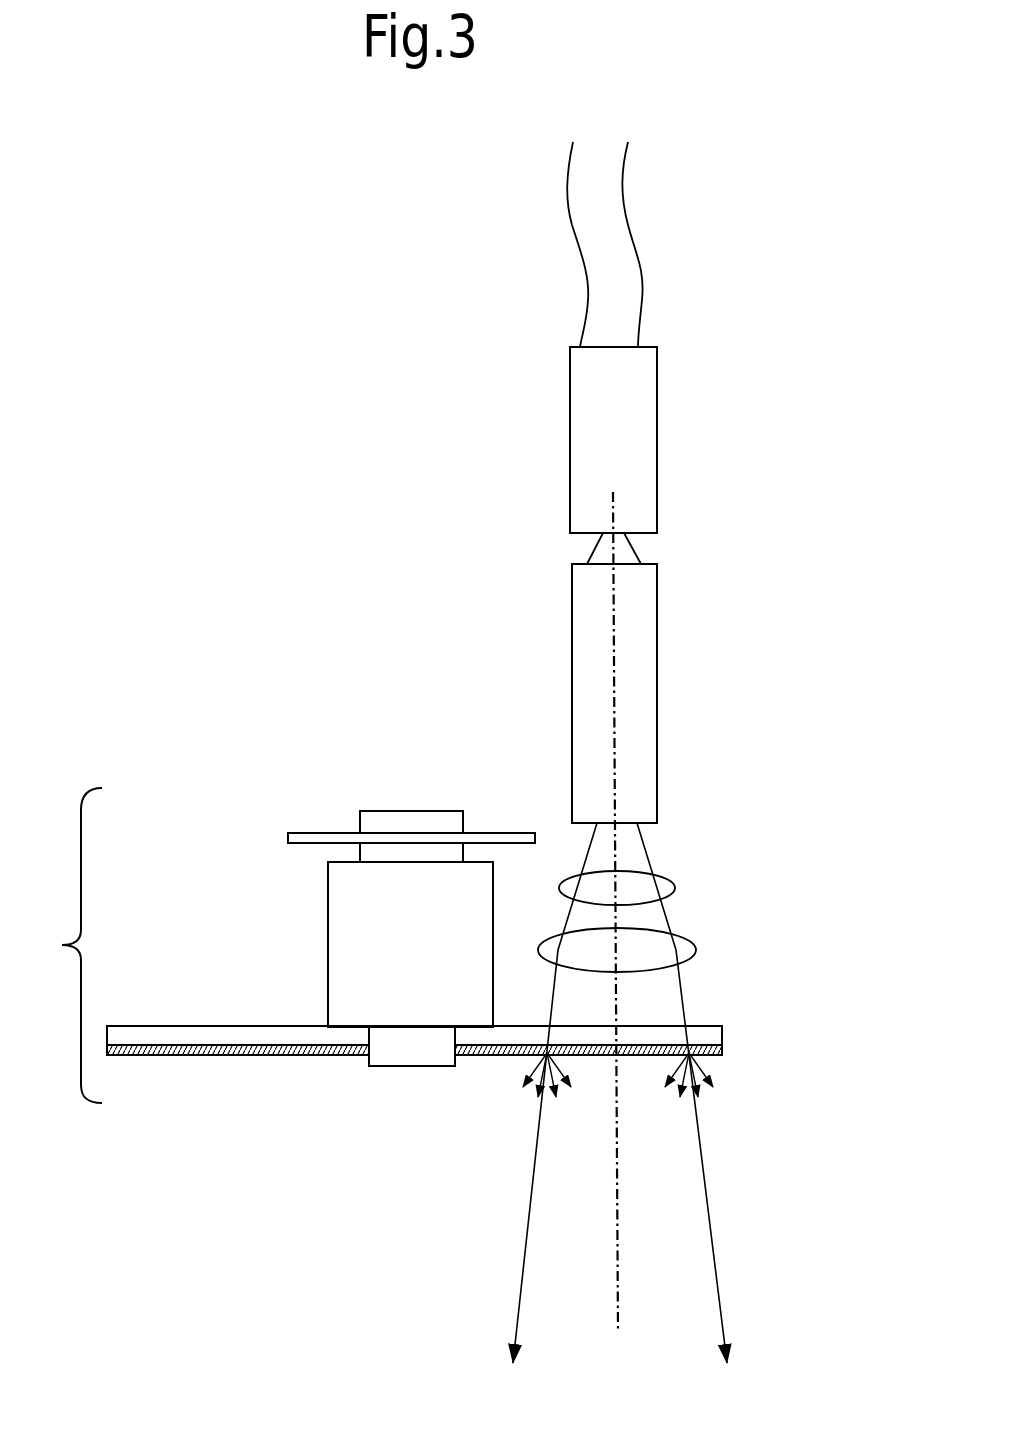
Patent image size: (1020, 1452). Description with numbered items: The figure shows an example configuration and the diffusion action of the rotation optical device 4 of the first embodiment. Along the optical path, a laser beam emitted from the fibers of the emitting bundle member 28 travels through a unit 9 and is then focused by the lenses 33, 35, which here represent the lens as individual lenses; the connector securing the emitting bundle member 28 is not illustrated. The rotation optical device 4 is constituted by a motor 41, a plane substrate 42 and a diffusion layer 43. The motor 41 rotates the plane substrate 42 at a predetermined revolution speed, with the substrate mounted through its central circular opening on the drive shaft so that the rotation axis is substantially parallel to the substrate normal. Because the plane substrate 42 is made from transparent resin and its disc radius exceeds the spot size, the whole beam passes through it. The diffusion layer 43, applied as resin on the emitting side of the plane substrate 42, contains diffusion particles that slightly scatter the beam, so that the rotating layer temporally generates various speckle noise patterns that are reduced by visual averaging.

The rotation optical device 4 is at (53, 956).
The light projecting unit 9 is at (572, 623).
The emitting bundle member 28 is at (582, 453).
The lens 33 is at (652, 948).
The lens 35 is at (650, 893).
The motor 41 is at (355, 940).
The plane substrate 42 is at (290, 1037).
The diffusion layer 43 is at (207, 1055).